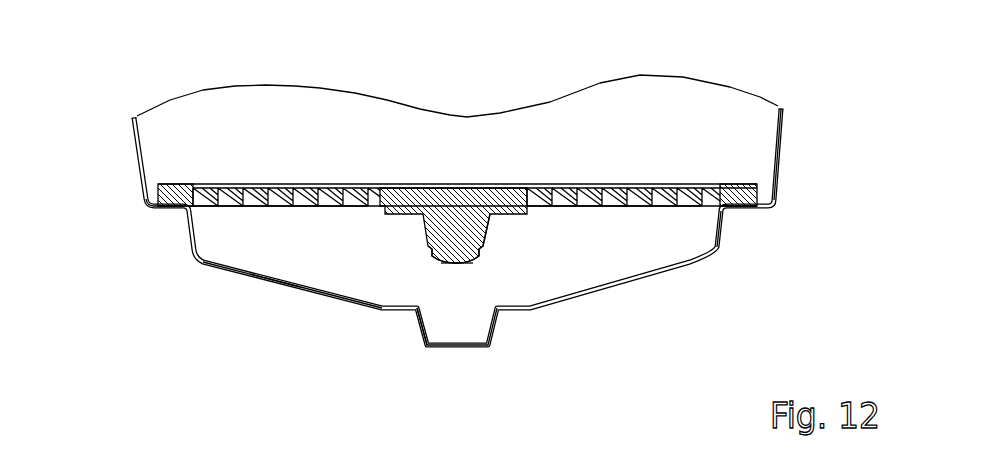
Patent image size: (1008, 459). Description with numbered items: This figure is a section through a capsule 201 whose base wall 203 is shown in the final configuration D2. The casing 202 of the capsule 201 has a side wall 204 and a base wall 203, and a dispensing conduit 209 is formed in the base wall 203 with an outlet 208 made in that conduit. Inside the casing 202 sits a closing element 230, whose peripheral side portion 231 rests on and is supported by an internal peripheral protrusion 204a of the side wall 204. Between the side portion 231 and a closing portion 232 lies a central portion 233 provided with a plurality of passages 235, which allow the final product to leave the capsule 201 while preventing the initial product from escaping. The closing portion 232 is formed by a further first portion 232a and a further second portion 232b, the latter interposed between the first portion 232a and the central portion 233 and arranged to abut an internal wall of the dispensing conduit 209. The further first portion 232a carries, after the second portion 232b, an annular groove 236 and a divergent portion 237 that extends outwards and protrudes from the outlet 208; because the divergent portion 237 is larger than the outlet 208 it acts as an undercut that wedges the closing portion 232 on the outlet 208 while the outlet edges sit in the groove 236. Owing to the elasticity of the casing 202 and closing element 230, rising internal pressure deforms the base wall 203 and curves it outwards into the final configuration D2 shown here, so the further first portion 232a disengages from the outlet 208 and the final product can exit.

The capsule 201 is at (147, 91).
The casing 202 is at (733, 281).
The base wall 203 is at (285, 282).
The side wall 204 is at (783, 115).
The internal peripheral protrusion 204a is at (165, 210).
The outlet 208 is at (472, 343).
The dispensing conduit 209 is at (410, 323).
The closing element 230 is at (520, 154).
The peripheral side portion 231 is at (740, 183).
The closing portion 232 is at (502, 194).
The further first portion 232a is at (482, 250).
The further second portion 232b is at (490, 233).
The central portion 233 is at (333, 192).
The passages 235 is at (693, 204).
The annular groove 236 is at (262, 272).
The divergent portion 237 is at (457, 288).
The final configuration D2 is at (176, 343).